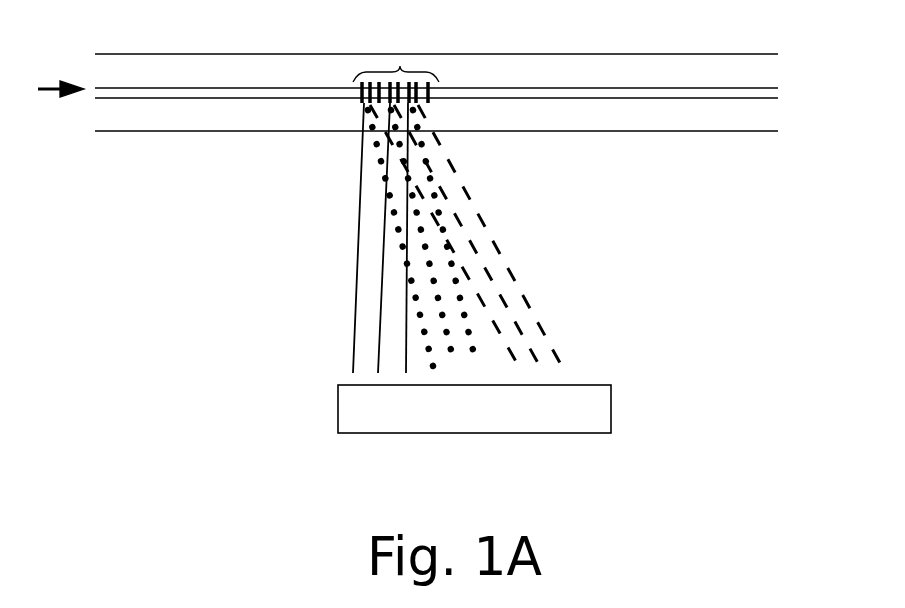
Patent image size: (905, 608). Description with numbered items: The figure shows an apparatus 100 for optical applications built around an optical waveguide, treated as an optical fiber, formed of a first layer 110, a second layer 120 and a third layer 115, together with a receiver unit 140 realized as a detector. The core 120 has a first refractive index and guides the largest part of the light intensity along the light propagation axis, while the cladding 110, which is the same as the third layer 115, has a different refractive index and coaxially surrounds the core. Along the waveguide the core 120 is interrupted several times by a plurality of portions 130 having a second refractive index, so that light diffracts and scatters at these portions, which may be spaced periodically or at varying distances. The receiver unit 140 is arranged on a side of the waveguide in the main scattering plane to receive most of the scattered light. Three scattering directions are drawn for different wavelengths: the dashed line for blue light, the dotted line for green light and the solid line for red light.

The apparatus 100 is at (196, 215).
The first layer 110 is at (620, 53).
The core 120 is at (762, 85).
The third layer 115 is at (720, 133).
The portions 130 is at (405, 67).
The receiver unit 140 is at (612, 400).